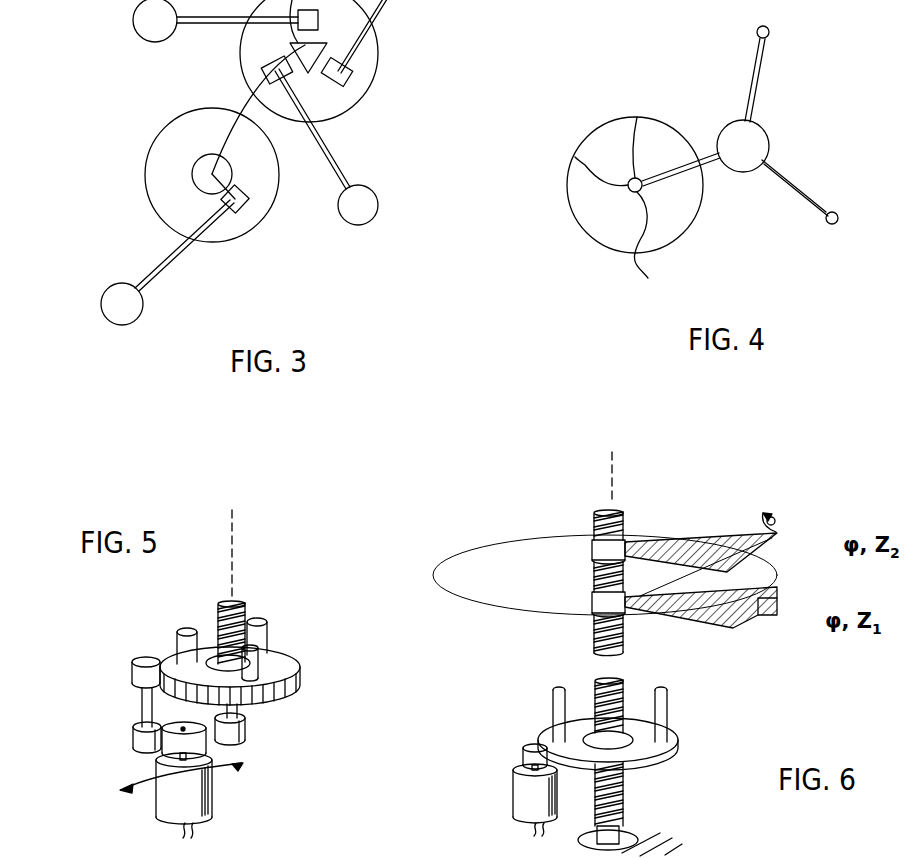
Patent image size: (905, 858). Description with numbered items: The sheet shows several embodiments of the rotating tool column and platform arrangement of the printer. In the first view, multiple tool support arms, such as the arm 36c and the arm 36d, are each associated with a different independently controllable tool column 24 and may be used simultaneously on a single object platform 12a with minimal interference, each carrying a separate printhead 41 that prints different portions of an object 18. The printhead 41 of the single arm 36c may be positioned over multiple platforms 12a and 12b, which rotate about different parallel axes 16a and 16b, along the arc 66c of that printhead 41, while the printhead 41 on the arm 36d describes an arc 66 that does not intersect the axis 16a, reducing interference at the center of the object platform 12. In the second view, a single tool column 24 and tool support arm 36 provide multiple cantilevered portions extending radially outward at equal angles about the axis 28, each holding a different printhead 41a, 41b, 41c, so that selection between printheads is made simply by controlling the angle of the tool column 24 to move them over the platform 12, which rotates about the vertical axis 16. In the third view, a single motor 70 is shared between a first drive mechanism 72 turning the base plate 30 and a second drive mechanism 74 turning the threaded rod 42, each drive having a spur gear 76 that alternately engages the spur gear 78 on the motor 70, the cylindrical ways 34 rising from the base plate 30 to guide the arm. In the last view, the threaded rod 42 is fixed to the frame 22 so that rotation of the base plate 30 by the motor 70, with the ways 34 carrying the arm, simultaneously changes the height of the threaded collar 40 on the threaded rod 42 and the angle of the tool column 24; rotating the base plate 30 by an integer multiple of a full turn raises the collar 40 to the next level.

In FIG. 4, the object platform 12 is at (592, 218).
In FIG. 3, the object platform 12a is at (368, 43).
In FIG. 3, the object platform 12b is at (265, 202).
In FIG. 4, the vertical axis 16 is at (575, 157).
In FIG. 3, the vertical axis 16a is at (290, 52).
In FIG. 3, the vertical axis 16b is at (205, 160).
In FIG. 3, the object 18 is at (212, 174).
In FIG. 6, the frame 22 is at (678, 840).
In FIG. 3, the tool column 24 is at (378, 205).
In FIG. 4, the tool column 24 is at (765, 128).
In FIG. 4, the axis 28 is at (745, 147).
In FIG. 5, the axis 28 is at (232, 544).
In FIG. 6, the axis 28 is at (612, 488).
In FIG. 5, the base plate 30 is at (287, 666).
In FIG. 6, the base plate 30 is at (653, 747).
In FIG. 5, the cylindrical ways 34 is at (177, 648).
In FIG. 6, the cylindrical ways 34 is at (553, 718).
In FIG. 4, the tool support arm 36 is at (748, 95).
In FIG. 3, the tool support arm 36c is at (338, 163).
In FIG. 3, the tool support arm 36d is at (178, 258).
In FIG. 6, the internally threaded collar 40 is at (600, 603).
In FIG. 3, the printhead 41 is at (352, 75).
In FIG. 6, the printhead 41 is at (843, 538).
In FIG. 4, the printhead 41a is at (757, 31).
In FIG. 4, the printhead 41b is at (838, 223).
In FIG. 4, the printhead 41c is at (655, 244).
In FIG. 5, the threaded rod 42 is at (248, 610).
In FIG. 6, the threaded rod 42 is at (625, 805).
In FIG. 3, the arc 66 is at (243, 215).
In FIG. 4, the arc 66 is at (633, 120).
In FIG. 3, the arc 66c is at (222, 132).
In FIG. 5, the motor 70 is at (212, 790).
In FIG. 6, the motor 70 is at (513, 798).
In FIG. 5, the first drive mechanism 72 is at (140, 708).
In FIG. 5, the second drive mechanism 74 is at (237, 712).
In FIG. 5, the spur gear 76 is at (133, 737).
In FIG. 5, the spur gear 78 is at (158, 752).
In FIG. 6, the spur gear 78 is at (523, 760).